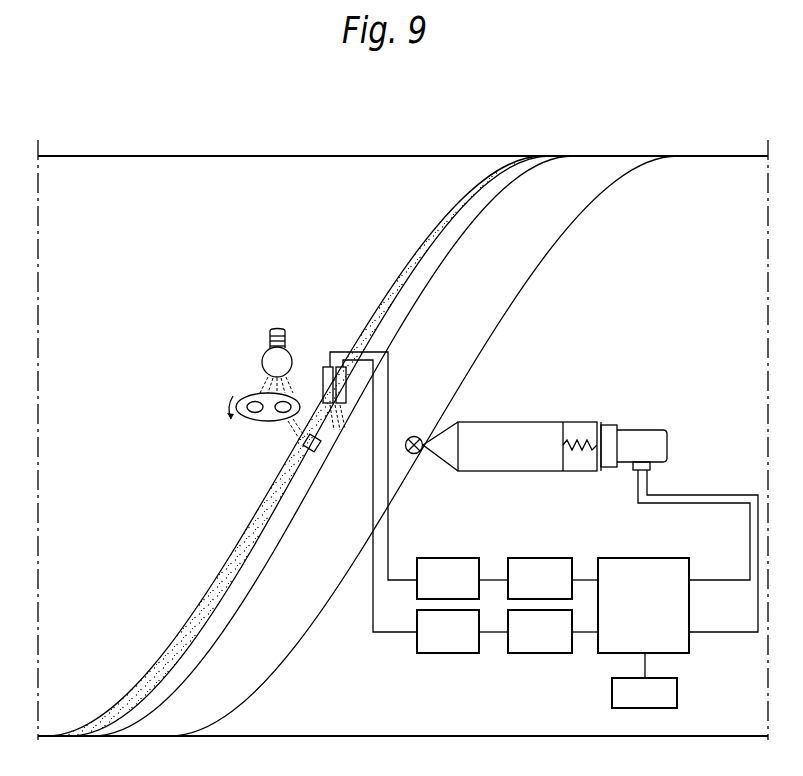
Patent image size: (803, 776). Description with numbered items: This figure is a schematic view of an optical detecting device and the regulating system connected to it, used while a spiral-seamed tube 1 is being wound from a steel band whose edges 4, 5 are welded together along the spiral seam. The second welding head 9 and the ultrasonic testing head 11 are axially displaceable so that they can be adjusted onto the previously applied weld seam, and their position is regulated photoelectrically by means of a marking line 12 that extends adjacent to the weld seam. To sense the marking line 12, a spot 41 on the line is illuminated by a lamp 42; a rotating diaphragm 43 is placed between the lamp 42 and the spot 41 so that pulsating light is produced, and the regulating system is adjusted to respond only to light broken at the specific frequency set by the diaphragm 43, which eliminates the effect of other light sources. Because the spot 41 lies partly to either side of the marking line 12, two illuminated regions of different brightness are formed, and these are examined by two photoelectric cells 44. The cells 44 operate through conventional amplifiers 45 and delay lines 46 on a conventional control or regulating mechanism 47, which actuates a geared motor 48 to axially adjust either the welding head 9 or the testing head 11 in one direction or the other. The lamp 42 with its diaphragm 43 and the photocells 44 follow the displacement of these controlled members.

The spiral-seamed tube 1 is at (713, 172).
The steel band edge 4 is at (385, 446).
The steel band edge 5 is at (578, 213).
The second welding head 9 is at (512, 426).
The ultrasonic testing head 11 is at (522, 430).
The marking line 12 is at (298, 446).
The illuminated spot 41 is at (315, 453).
The lamp 42 is at (266, 358).
The rotating diaphragm 43 is at (252, 414).
The photoelectric cells 44 is at (341, 366).
The amplifiers 45 is at (460, 568).
The delay lines 46 is at (556, 568).
The control or regulating mechanism 47 is at (652, 570).
The geared motor 48 is at (633, 442).